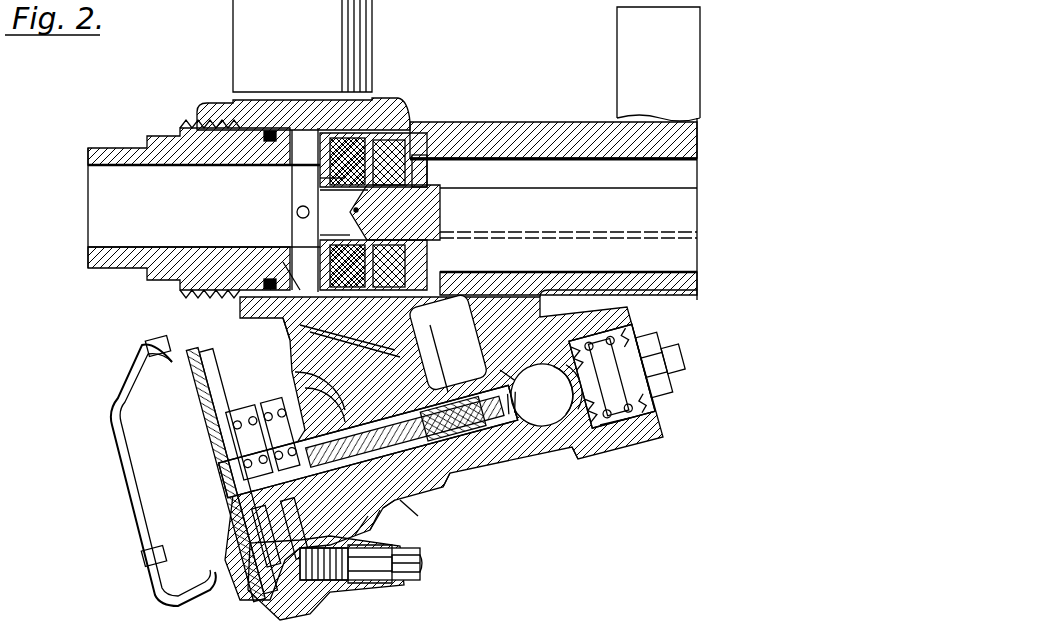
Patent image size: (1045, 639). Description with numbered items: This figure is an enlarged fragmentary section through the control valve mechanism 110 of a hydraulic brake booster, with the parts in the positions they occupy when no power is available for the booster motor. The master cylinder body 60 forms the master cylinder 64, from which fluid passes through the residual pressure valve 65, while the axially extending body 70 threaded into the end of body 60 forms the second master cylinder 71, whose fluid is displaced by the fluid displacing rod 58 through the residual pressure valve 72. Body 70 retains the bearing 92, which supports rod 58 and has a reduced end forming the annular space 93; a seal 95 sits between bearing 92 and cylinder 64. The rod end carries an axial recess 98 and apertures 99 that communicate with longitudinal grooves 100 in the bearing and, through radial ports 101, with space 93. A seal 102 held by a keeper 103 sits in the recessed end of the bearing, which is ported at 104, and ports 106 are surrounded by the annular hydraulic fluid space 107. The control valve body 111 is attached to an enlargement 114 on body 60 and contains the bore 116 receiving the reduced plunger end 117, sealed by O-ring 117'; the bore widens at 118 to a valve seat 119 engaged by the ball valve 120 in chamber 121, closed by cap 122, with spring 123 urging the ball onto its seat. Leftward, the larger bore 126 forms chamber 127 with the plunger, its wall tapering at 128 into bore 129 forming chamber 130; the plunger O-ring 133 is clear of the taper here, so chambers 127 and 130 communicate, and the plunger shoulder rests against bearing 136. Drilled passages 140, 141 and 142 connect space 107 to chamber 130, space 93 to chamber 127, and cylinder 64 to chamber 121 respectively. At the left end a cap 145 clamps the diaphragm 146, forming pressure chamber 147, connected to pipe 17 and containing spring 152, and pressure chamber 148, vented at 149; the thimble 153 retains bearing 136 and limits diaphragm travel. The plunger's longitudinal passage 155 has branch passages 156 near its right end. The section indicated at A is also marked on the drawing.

The pipe 17 is at (402, 572).
The fluid displacing rod 58 is at (582, 217).
The master cylinder body 60 is at (525, 121).
The master cylinder 64 is at (577, 165).
The residual pressure valve 65 is at (617, 42).
The axially extending body 70 is at (114, 147).
The second master cylinder 71 is at (90, 185).
The residual pressure valve 72 is at (234, 51).
The bearing 92 is at (408, 150).
The annular space 93 is at (400, 142).
The seal 95 is at (420, 158).
The axial recess 98 is at (330, 216).
The apertures 99 is at (320, 195).
The longitudinal grooves 100 is at (368, 192).
The radial ports 101 is at (395, 138).
The seal 102 is at (320, 181).
The keeper 103 is at (312, 262).
The port 104 is at (418, 257).
The ports 106 is at (300, 160).
The annular hydraulic fluid space 107 is at (283, 262).
The control valve mechanism 110 is at (588, 449).
The body 111 is at (557, 450).
The enlargement 114 is at (288, 333).
The bore 116 is at (472, 449).
The reduced end of plunger 117 is at (375, 466).
The O-ring 117' is at (445, 358).
The enlarged end of bore 118 is at (530, 448).
The valve seat 119 is at (515, 382).
The ball valve 120 is at (552, 386).
The chamber 121 is at (618, 440).
The cap 122 is at (638, 330).
The spring 123 is at (668, 366).
The larger bore 126 is at (430, 466).
The chamber 127 is at (402, 472).
The tapered surface 128 is at (360, 500).
The larger bore 129 is at (300, 378).
The chamber 130 is at (310, 395).
The O-ring 133 is at (410, 507).
The bearing 136 is at (232, 405).
The passage 140 is at (310, 347).
The passage 141 is at (418, 319).
The passage 142 is at (498, 275).
The cap 145 is at (142, 554).
The diaphragm 146 is at (212, 574).
The pressure chamber 147 is at (285, 597).
The pressure chamber 148 is at (128, 448).
The vent 149 is at (116, 432).
The spring 152 is at (210, 403).
The thimble 153 is at (235, 535).
The longitudinal passage 155 is at (505, 402).
The branch passages 156 is at (505, 416).
The section line A is at (362, 506).